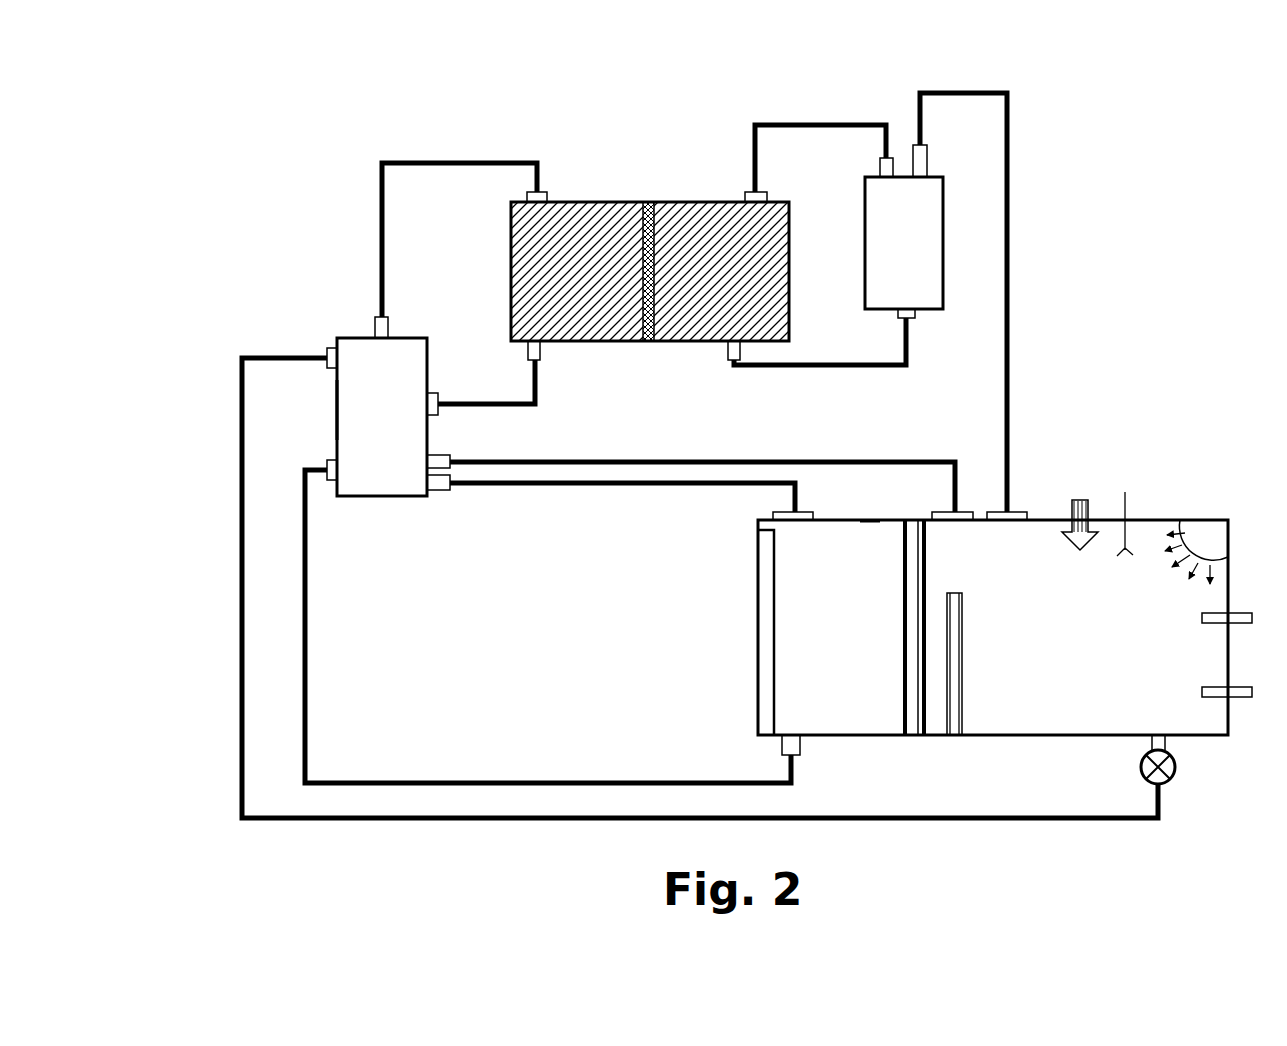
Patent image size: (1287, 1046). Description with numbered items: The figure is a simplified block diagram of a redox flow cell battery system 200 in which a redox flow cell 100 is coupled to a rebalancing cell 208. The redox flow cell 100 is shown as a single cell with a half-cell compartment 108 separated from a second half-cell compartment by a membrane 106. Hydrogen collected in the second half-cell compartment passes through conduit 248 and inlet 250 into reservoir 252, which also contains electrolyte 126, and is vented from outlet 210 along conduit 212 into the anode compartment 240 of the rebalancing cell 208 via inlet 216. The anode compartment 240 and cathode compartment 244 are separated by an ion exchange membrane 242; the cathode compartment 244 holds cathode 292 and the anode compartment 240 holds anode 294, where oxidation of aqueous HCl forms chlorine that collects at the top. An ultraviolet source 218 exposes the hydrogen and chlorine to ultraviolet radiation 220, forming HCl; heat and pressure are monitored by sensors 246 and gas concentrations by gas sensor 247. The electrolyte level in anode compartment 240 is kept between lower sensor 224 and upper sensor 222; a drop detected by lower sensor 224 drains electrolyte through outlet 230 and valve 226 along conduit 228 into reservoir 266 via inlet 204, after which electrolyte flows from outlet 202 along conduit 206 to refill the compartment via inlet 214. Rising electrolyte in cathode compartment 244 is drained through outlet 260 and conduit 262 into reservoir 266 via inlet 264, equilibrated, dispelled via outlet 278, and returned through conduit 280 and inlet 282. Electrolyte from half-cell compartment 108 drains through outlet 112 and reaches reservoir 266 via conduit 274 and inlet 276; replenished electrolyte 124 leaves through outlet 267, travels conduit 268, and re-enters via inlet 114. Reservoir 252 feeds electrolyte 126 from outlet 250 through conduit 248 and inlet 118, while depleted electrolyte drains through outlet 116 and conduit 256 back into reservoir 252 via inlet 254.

The redox flow cell battery system 200 is at (258, 155).
The redox flow cell 100 is at (628, 269).
The membrane 106 is at (647, 343).
The half-cell compartment 108 is at (578, 212).
The outlet 112 is at (541, 351).
The inlet 114 is at (527, 197).
The outlet 116 is at (728, 351).
The inlet 118 is at (750, 192).
The replenished electrolyte 124 is at (382, 405).
The electrolyte 126 is at (944, 240).
The outlet 202 is at (445, 455).
The inlet 204 is at (330, 348).
The conduit 206 is at (862, 460).
The rebalancing cell 208 is at (982, 608).
The outlet 210 is at (927, 160).
The conduit 212 is at (1010, 303).
The inlet 214 is at (956, 505).
The inlet 216 is at (1018, 505).
The ultraviolet source 218 is at (1218, 520).
The ultraviolet radiation 220 is at (1160, 553).
The upper sensor 222 is at (1202, 619).
The lower sensor 224 is at (1202, 693).
The valve 226 is at (1142, 764).
The conduit 228 is at (908, 815).
The outlet 230 is at (866, 530).
The anode compartment 240 is at (1074, 698).
The ion exchange membrane 242 is at (903, 640).
The cathode compartment 244 is at (834, 703).
The sensors 246 is at (1080, 500).
The gas sensor 247 is at (1128, 493).
The conduit 248 is at (785, 124).
The inlet/outlet 250 is at (880, 166).
The reservoir 252 is at (930, 249).
The inlet 254 is at (915, 315).
The conduit 256 is at (850, 364).
The outlet 260 is at (800, 746).
The conduit 262 is at (312, 606).
The inlet 264 is at (330, 460).
The reservoir 266 is at (337, 397).
The outlet 267 is at (378, 318).
The conduit 268 is at (392, 161).
The conduit 274 is at (540, 404).
The inlet 276 is at (437, 393).
The outlet 278 is at (446, 492).
The conduit 280 is at (593, 486).
The inlet 282 is at (773, 518).
The cathode 292 is at (778, 608).
The anode 294 is at (955, 593).